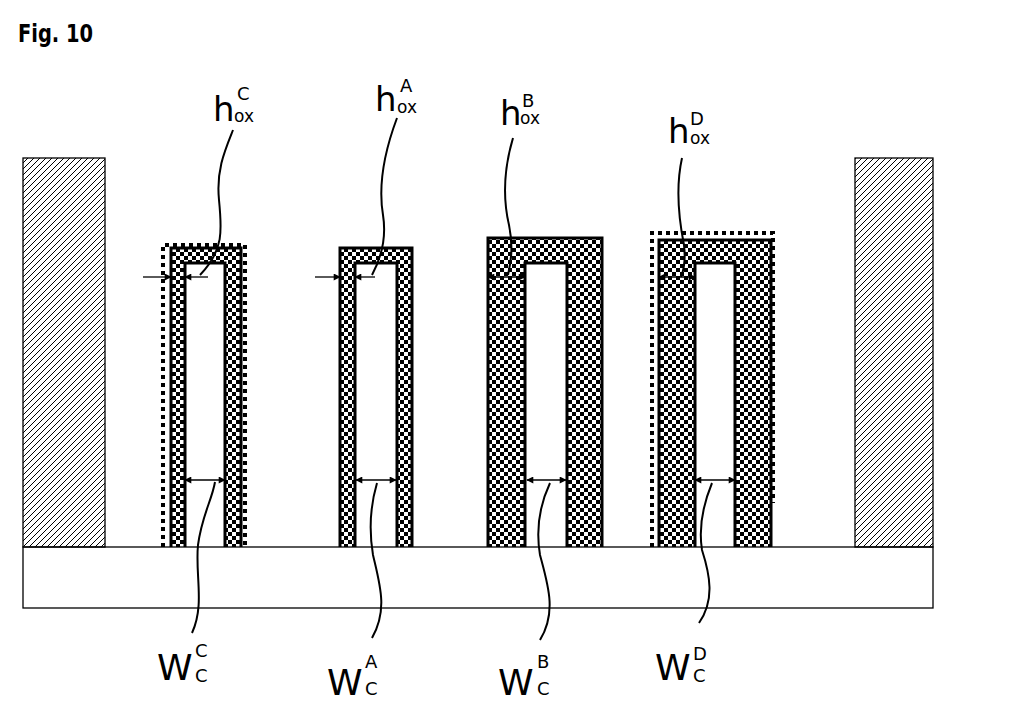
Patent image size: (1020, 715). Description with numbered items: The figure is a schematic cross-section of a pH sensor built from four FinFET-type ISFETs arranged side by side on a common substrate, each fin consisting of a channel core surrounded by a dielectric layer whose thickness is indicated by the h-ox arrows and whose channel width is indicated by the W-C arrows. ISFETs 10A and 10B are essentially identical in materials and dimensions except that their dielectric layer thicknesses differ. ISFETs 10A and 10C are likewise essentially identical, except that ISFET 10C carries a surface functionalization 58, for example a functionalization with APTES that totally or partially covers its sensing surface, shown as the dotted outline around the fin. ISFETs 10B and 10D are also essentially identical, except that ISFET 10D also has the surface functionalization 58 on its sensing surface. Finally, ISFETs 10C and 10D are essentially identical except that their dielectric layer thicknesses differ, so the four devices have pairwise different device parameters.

The ISFET 10A is at (355, 220).
The ISFET 10B is at (553, 217).
The ISFET 10C is at (208, 227).
The ISFET 10D is at (715, 217).
The surface functionalization 58 is at (167, 493).